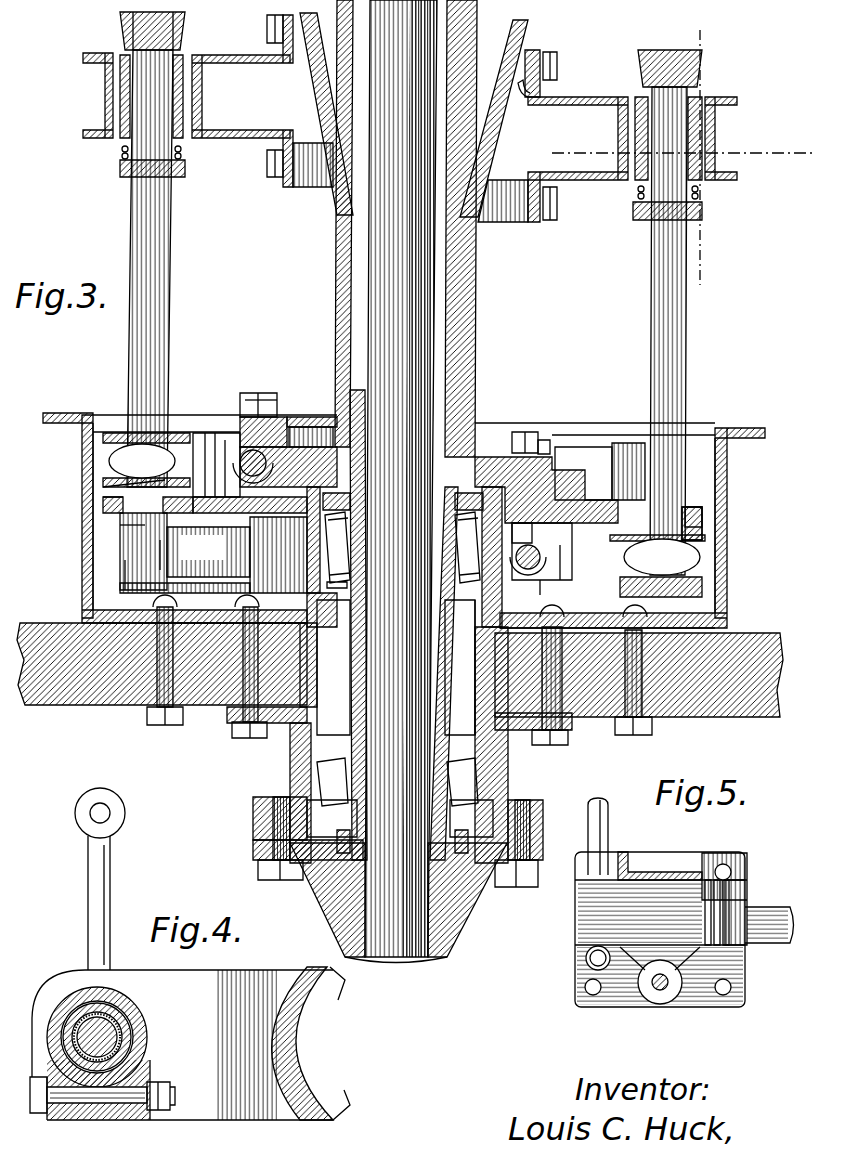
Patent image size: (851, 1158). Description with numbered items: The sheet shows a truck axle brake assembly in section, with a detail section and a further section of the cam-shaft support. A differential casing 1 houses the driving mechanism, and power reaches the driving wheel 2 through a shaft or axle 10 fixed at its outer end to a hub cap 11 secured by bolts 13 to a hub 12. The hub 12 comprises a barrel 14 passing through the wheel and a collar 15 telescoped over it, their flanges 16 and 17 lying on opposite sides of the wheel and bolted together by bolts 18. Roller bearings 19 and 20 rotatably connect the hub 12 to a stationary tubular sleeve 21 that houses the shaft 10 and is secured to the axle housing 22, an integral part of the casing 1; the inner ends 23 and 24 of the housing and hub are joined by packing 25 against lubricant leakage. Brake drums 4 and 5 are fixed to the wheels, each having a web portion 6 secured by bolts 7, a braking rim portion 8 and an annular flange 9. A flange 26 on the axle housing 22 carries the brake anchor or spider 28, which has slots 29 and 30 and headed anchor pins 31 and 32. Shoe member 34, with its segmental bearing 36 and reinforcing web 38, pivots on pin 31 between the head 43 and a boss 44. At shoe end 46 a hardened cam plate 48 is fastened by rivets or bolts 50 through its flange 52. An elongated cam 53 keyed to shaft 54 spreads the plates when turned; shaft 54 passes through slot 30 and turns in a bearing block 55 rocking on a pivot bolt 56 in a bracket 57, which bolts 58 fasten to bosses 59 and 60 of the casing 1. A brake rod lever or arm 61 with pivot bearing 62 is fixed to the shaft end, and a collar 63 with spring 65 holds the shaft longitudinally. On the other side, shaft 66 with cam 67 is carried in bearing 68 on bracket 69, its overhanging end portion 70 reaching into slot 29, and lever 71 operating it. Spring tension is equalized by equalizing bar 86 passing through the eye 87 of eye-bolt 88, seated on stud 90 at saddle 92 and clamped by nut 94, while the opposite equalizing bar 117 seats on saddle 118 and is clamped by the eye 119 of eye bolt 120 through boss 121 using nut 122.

In FIG. 3, the differential casing 1 is at (556, 27).
In FIG. 4, the differential casing 1 is at (313, 1033).
In FIG. 3, the driving wheel 2 is at (90, 703).
In FIG. 3, the brake drum 4 is at (53, 586).
In FIG. 3, the brake drum 5 is at (707, 150).
In FIG. 3, the web portion 6 is at (95, 612).
In FIG. 3, the bolts 7 is at (160, 725).
In FIG. 3, the braking or rim portion 8 is at (82, 472).
In FIG. 3, the annular flange 9 is at (60, 413).
In FIG. 3, the shaft or axle 10 is at (401, 478).
In FIG. 3, the hub cap 11 is at (452, 920).
In FIG. 3, the hub 12 is at (398, 667).
In FIG. 3, the bolts 13 is at (285, 880).
In FIG. 3, the barrel 14 is at (478, 665).
In FIG. 3, the collar 15 is at (508, 776).
In FIG. 3, the flange 16 is at (401, 557).
In FIG. 3, the flange 17 is at (283, 723).
In FIG. 3, the bolts 18 is at (247, 738).
In FIG. 3, the roller bearing 19 is at (440, 784).
In FIG. 3, the roller bearing 20 is at (465, 566).
In FIG. 3, the tubular sleeve 21 is at (365, 663).
In FIG. 3, the axle housing 22 is at (337, 315).
In FIG. 3, the inner end 23 is at (305, 477).
In FIG. 3, the inner end 24 is at (315, 445).
In FIG. 3, the packing 25 is at (458, 500).
In FIG. 3, the flange 26 is at (508, 410).
In FIG. 3, the brake anchor or spider 28 is at (103, 505).
In FIG. 3, the slot 29 is at (115, 510).
In FIG. 3, the slot 30 is at (705, 513).
In FIG. 3, the anchor pin or stud 31 is at (185, 551).
In FIG. 3, the anchor pin or stud 32 is at (600, 471).
In FIG. 3, the brake shoe member 34 is at (135, 572).
In FIG. 3, the segmental bearing 36 is at (180, 548).
In FIG. 3, the reinforcing web 38 is at (278, 555).
In FIG. 3, the head 43 is at (135, 588).
In FIG. 3, the boss 44 is at (160, 530).
In FIG. 3, the end of shoe member 46 is at (206, 601).
In FIG. 3, the cam plate 48 is at (705, 590).
In FIG. 3, the rivets or bolts 50 is at (651, 606).
In FIG. 3, the flange 52 is at (578, 606).
In FIG. 3, the cam 53 is at (657, 555).
In FIG. 3, the shaft 54 is at (688, 318).
In FIG. 4, the shaft 54 is at (120, 1015).
In FIG. 5, the shaft 54 is at (765, 907).
In FIG. 3, the bearing block 55 is at (702, 137).
In FIG. 4, the bearing block 55 is at (133, 1048).
In FIG. 5, the bearing block 55 is at (645, 880).
In FIG. 4, the pivot bolt 56 is at (100, 1113).
In FIG. 5, the pivot bolt 56 is at (658, 1004).
In FIG. 3, the bracket 57 is at (600, 180).
In FIG. 4, the bracket 57 is at (182, 1045).
In FIG. 5, the bracket 57 is at (683, 870).
In FIG. 3, the bolts 58 is at (557, 66).
In FIG. 5, the bolts 58 is at (727, 866).
In FIG. 3, the stud or boss 59 is at (520, 100).
In FIG. 3, the stud or boss 60 is at (500, 222).
In FIG. 3, the brake rod lever or arm 61 is at (705, 70).
In FIG. 4, the brake rod lever or arm 61 is at (110, 895).
In FIG. 5, the brake rod lever or arm 61 is at (608, 838).
In FIG. 4, the pivot bearing 62 is at (122, 813).
In FIG. 3, the collar 63 is at (702, 218).
In FIG. 5, the collar 63 is at (747, 875).
In FIG. 3, the spring 65 is at (700, 194).
In FIG. 5, the spring 65 is at (705, 918).
In FIG. 3, the shaft 66 is at (168, 305).
In FIG. 3, the cam 67 is at (146, 460).
In FIG. 3, the bearing 68 is at (105, 113).
In FIG. 3, the bracket 69 is at (222, 55).
In FIG. 3, the overhanging end portion 70 is at (148, 500).
In FIG. 3, the lever 71 is at (185, 25).
In FIG. 3, the equalizing bar 86 is at (526, 570).
In FIG. 3, the eye 87 is at (552, 592).
In FIG. 3, the eye-bolt 88 is at (530, 432).
In FIG. 3, the stud 90 is at (543, 533).
In FIG. 3, the V-shaped seat or saddle 92 is at (560, 566).
In FIG. 3, the nut 94 is at (548, 440).
In FIG. 3, the equalizing bar 117 is at (238, 440).
In FIG. 3, the saddle 118 is at (243, 420).
In FIG. 3, the eye 119 is at (243, 478).
In FIG. 3, the eye bolt 120 is at (260, 393).
In FIG. 3, the boss 121 is at (297, 417).
In FIG. 3, the nut 122 is at (245, 398).